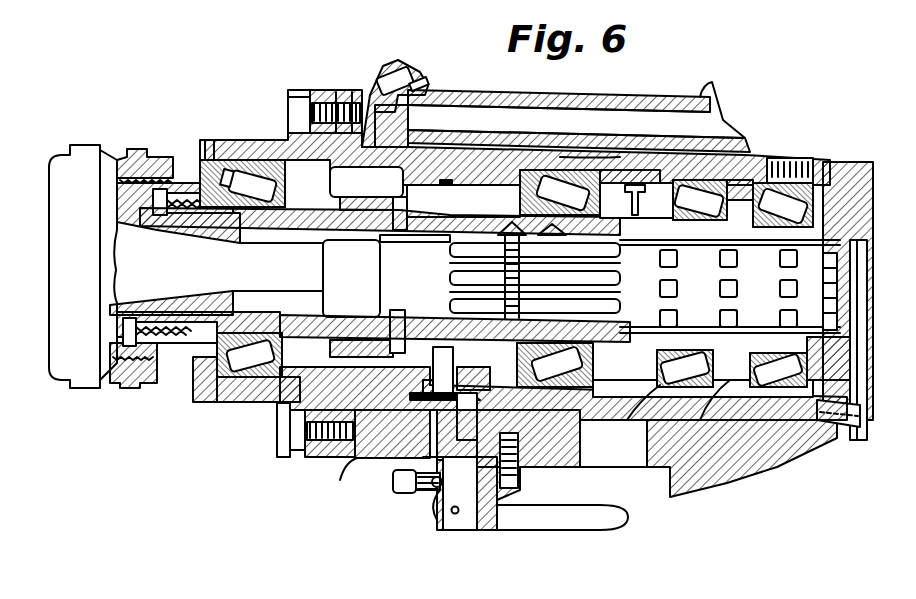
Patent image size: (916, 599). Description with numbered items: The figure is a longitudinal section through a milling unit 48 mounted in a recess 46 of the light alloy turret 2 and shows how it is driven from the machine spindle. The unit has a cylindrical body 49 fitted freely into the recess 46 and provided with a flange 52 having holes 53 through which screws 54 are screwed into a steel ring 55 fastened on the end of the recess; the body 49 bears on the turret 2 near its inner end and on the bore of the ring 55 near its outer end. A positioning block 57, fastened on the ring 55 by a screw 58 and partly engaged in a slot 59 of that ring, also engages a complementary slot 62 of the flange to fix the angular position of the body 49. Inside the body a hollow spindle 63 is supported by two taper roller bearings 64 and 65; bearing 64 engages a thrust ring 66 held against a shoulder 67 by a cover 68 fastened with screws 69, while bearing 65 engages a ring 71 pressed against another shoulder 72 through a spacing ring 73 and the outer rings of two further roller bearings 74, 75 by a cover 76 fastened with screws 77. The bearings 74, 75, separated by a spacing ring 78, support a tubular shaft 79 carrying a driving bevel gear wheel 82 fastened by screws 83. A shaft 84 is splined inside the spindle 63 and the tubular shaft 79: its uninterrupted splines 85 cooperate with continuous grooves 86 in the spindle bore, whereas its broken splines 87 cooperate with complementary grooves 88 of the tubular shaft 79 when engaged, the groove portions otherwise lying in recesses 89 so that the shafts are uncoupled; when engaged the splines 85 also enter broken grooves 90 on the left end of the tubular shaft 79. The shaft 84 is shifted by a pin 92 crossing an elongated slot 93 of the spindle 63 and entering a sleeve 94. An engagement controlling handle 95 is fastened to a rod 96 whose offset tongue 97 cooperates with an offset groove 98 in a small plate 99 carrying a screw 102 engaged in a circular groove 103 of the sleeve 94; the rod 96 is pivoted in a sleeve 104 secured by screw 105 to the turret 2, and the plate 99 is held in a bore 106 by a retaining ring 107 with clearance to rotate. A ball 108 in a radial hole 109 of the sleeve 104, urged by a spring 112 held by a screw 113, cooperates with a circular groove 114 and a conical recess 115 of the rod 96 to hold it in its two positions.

The turret 2 is at (702, 100).
The recess 46 is at (615, 155).
The milling unit 48 is at (128, 388).
The cylindrical body 49 is at (480, 150).
The flange 52 is at (305, 90).
The holes 53 is at (322, 100).
The screws 54 is at (352, 100).
The ring 55 is at (336, 98).
The positioning block 57 is at (328, 455).
The screw 58 is at (305, 455).
The slot 59 is at (298, 340).
The complementary slot 62 is at (280, 405).
The hollow spindle 63 is at (475, 220).
The taper roller bearing 64 is at (235, 400).
The taper roller bearing 65 is at (596, 460).
The thrust ring 66 is at (292, 162).
The shoulder 67 is at (338, 180).
The cover 68 is at (190, 392).
The screws 69 is at (205, 145).
The ring 71 is at (555, 143).
The shoulder 72 is at (508, 150).
The spacing ring 73 is at (612, 178).
The roller bearing 74 is at (700, 430).
The roller bearing 75 is at (778, 440).
The cover 76 is at (800, 445).
The screws 77 is at (790, 170).
The spacing ring 78 is at (745, 430).
The tubular shaft 79 is at (850, 355).
The driving bevel gear wheel 82 is at (850, 420).
The screws 83 is at (866, 250).
The shaft 84 is at (380, 248).
The uninterrupted splines 85 is at (448, 306).
The continuous grooves 86 is at (397, 318).
The broken splines 87 is at (722, 290).
The complementary grooves 88 is at (700, 325).
The recesses 89 is at (780, 248).
The broken grooves 90 is at (642, 240).
The pin 92 is at (378, 302).
The elongated slot 93 is at (416, 236).
The sleeve 94 is at (362, 203).
The engagement controlling handle 95 is at (590, 528).
The rod 96 is at (455, 515).
The offset tongue 97 is at (462, 408).
The groove 98 is at (565, 465).
The small plate 99 is at (475, 380).
The screw 102 is at (425, 370).
The circular groove 103 is at (446, 197).
The sleeve 104 is at (480, 505).
The screw 105 is at (518, 478).
The bore 106 is at (512, 318).
The retaining ring 107 is at (420, 395).
The ball 108 is at (435, 488).
The radial hole 109 is at (362, 472).
The spring 112 is at (420, 490).
The screw 113 is at (392, 480).
The circular groove 114 is at (435, 515).
The conical recess 115 is at (445, 465).